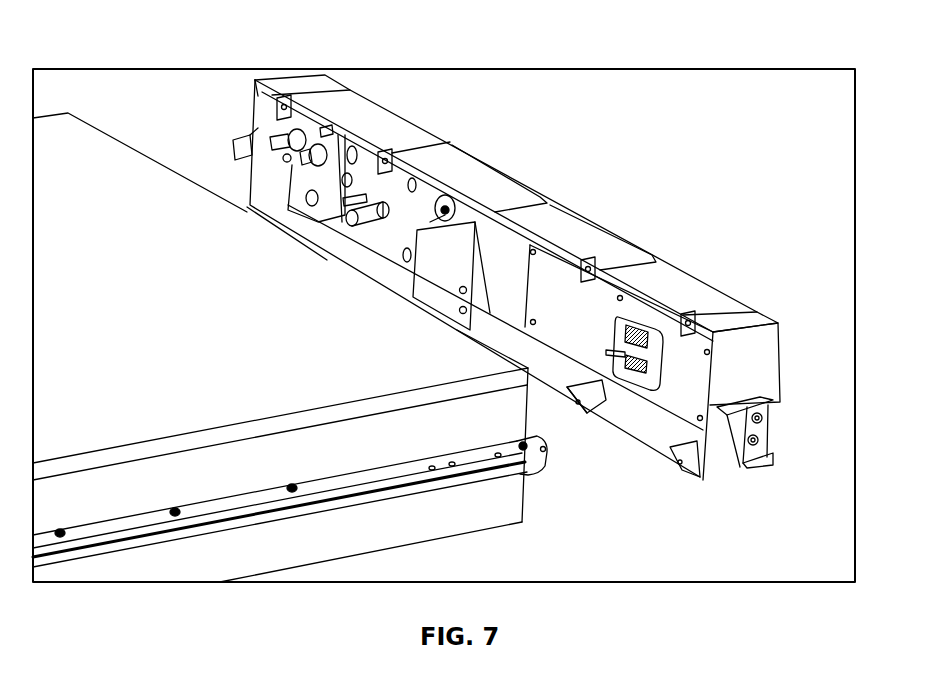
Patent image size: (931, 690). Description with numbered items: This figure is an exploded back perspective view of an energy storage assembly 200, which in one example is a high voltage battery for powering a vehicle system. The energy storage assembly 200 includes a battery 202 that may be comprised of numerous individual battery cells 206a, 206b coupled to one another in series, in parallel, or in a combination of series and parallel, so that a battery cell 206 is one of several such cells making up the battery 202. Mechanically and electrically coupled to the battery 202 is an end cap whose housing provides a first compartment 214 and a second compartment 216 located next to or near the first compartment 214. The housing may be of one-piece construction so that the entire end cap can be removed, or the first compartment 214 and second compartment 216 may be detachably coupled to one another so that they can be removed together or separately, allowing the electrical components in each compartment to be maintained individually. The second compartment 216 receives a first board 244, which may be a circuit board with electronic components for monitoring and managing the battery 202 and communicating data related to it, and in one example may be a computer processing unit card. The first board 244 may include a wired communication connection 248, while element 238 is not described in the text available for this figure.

The energy storage assembly 200 is at (596, 61).
The battery 202 is at (48, 125).
The battery cell 206 is at (731, 268).
The battery cell 206a is at (517, 415).
The battery cell 206b is at (463, 523).
The first compartment 214 is at (243, 63).
The second compartment 216 is at (818, 305).
The connectors 238 is at (285, 130).
The first board 244 is at (558, 290).
The wired communication connection 248 is at (658, 380).